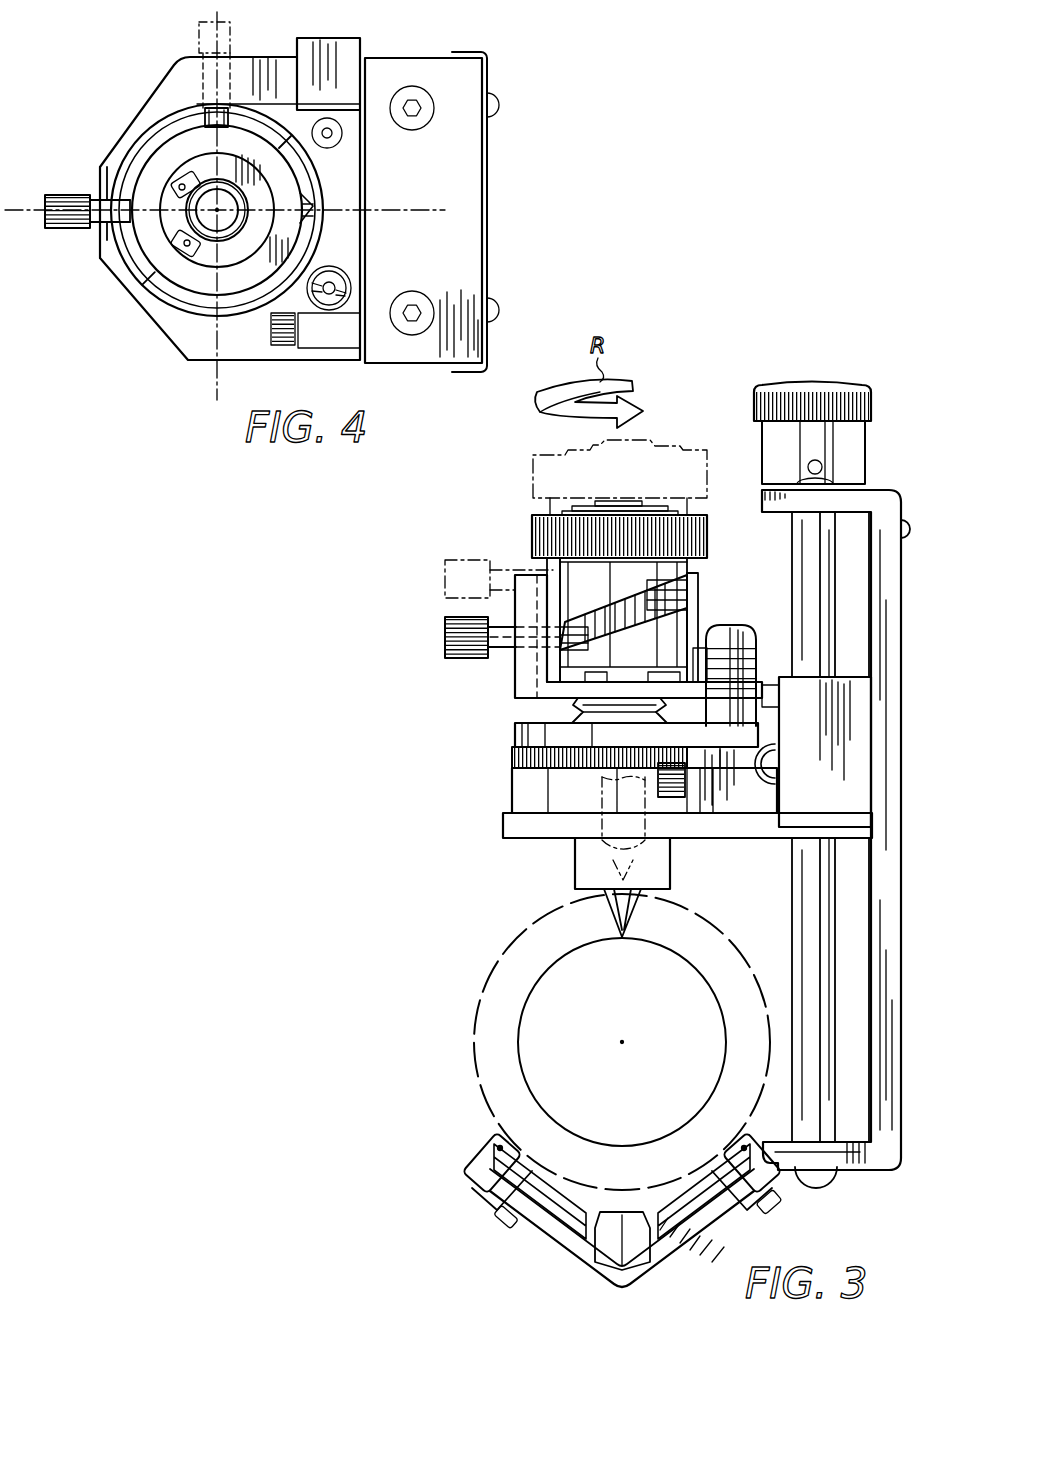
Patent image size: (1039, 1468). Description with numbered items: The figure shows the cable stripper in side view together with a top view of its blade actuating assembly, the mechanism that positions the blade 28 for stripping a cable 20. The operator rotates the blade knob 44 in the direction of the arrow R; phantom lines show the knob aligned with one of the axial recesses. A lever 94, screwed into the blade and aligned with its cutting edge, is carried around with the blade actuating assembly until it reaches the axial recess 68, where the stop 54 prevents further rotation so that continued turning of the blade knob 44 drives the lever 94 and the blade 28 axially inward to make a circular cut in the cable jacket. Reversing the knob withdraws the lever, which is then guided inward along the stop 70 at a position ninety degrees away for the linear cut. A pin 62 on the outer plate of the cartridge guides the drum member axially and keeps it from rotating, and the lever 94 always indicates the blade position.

In FIG. 3, the cable 20 is at (516, 939).
In FIG. 3, the blade 28 is at (636, 918).
In FIG. 3, the blade knob 44 is at (537, 540).
In FIG. 4, the angular stop 54 is at (130, 197).
In FIG. 3, the angular stop 54 is at (527, 603).
In FIG. 4, the pin 62 is at (312, 208).
In FIG. 3, the axial recess 68 is at (513, 655).
In FIG. 4, the angular stop 70 is at (203, 112).
In FIG. 4, the lever 94 is at (70, 216).